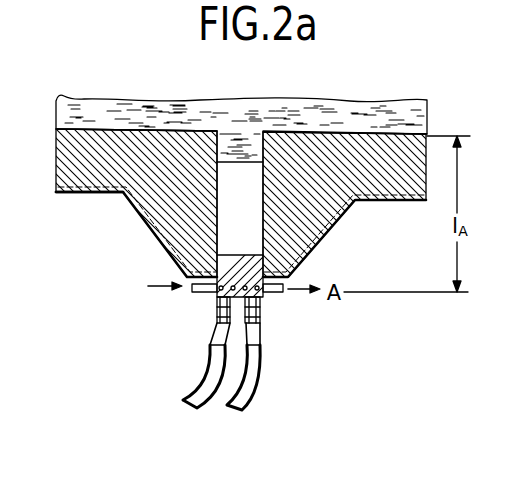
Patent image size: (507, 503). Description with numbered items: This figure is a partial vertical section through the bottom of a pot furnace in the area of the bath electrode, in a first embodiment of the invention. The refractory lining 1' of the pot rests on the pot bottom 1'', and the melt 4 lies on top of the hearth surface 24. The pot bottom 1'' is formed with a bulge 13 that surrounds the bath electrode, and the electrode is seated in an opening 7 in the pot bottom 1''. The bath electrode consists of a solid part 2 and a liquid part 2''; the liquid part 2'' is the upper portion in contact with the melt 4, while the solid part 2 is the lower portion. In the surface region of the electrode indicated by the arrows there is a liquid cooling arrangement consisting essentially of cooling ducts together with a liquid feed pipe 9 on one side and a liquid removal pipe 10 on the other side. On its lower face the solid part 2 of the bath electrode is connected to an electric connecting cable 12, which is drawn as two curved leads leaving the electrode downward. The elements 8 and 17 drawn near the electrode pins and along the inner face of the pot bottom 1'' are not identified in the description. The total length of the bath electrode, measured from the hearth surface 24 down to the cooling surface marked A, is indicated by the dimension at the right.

The refractory lining 1' is at (253, 187).
The pot bottom 1'' is at (89, 222).
The solid part of the bath electrode 2 is at (252, 270).
The liquid part of the bath electrode 2'' is at (227, 111).
The melt 4 is at (288, 110).
The opening in the pot bottom 7 is at (238, 232).
The connecting pins 8 is at (220, 290).
The liquid feed pipe 9 is at (196, 292).
The liquid removal pipe 10 is at (279, 292).
The electric connecting cable 12 is at (238, 399).
The bulge 13 is at (322, 236).
The left lining sheet 17 is at (110, 193).
The hearth surface 24 is at (135, 129).